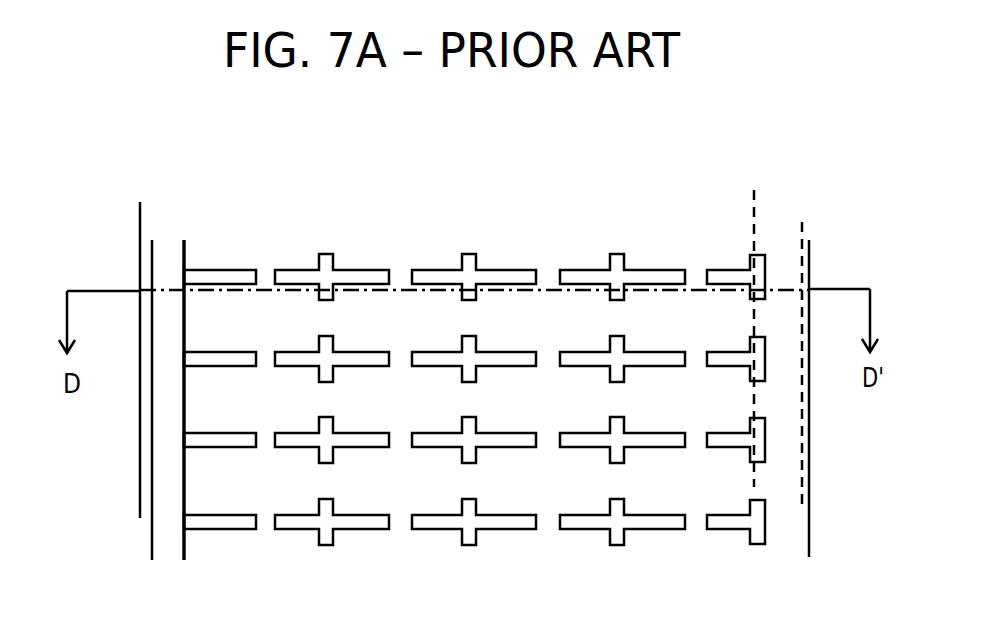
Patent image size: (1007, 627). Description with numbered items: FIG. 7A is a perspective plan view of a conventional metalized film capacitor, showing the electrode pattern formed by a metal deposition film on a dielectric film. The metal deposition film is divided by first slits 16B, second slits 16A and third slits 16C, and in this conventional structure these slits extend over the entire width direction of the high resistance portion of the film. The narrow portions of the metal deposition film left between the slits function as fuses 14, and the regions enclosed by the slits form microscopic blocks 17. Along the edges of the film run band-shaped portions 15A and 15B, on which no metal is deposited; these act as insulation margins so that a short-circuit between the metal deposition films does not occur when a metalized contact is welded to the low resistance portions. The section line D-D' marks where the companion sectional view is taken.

The fuses 14 is at (582, 383).
The band-shaped portion 15A is at (167, 543).
The band-shaped portion 15B is at (780, 213).
The second slits 16A is at (718, 272).
The first slits 16B is at (467, 258).
The third slits 16C is at (613, 258).
The microscopic blocks 17 is at (260, 480).